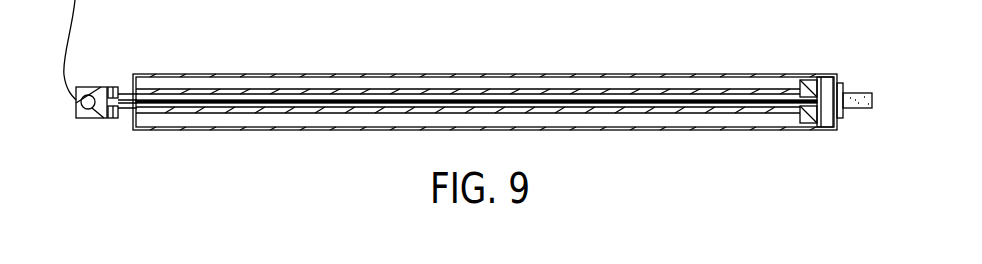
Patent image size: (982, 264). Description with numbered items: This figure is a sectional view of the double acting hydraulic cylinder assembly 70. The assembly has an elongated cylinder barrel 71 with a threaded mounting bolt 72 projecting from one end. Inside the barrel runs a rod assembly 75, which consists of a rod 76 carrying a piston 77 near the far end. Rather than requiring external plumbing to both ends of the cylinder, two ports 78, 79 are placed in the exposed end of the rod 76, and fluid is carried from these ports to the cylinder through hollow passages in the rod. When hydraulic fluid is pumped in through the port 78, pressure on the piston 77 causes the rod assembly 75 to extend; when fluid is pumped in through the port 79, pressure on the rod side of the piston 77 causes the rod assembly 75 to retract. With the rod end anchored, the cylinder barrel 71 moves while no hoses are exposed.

The double acting hydraulic cylinder assembly 70 is at (485, 81).
The cylinder barrel 71 is at (472, 75).
The threaded mounting bolt 72 is at (850, 93).
The rod assembly 75 is at (476, 127).
The rod 76 is at (251, 107).
The piston 77 is at (800, 118).
The port 78 is at (107, 120).
The port 79 is at (110, 86).